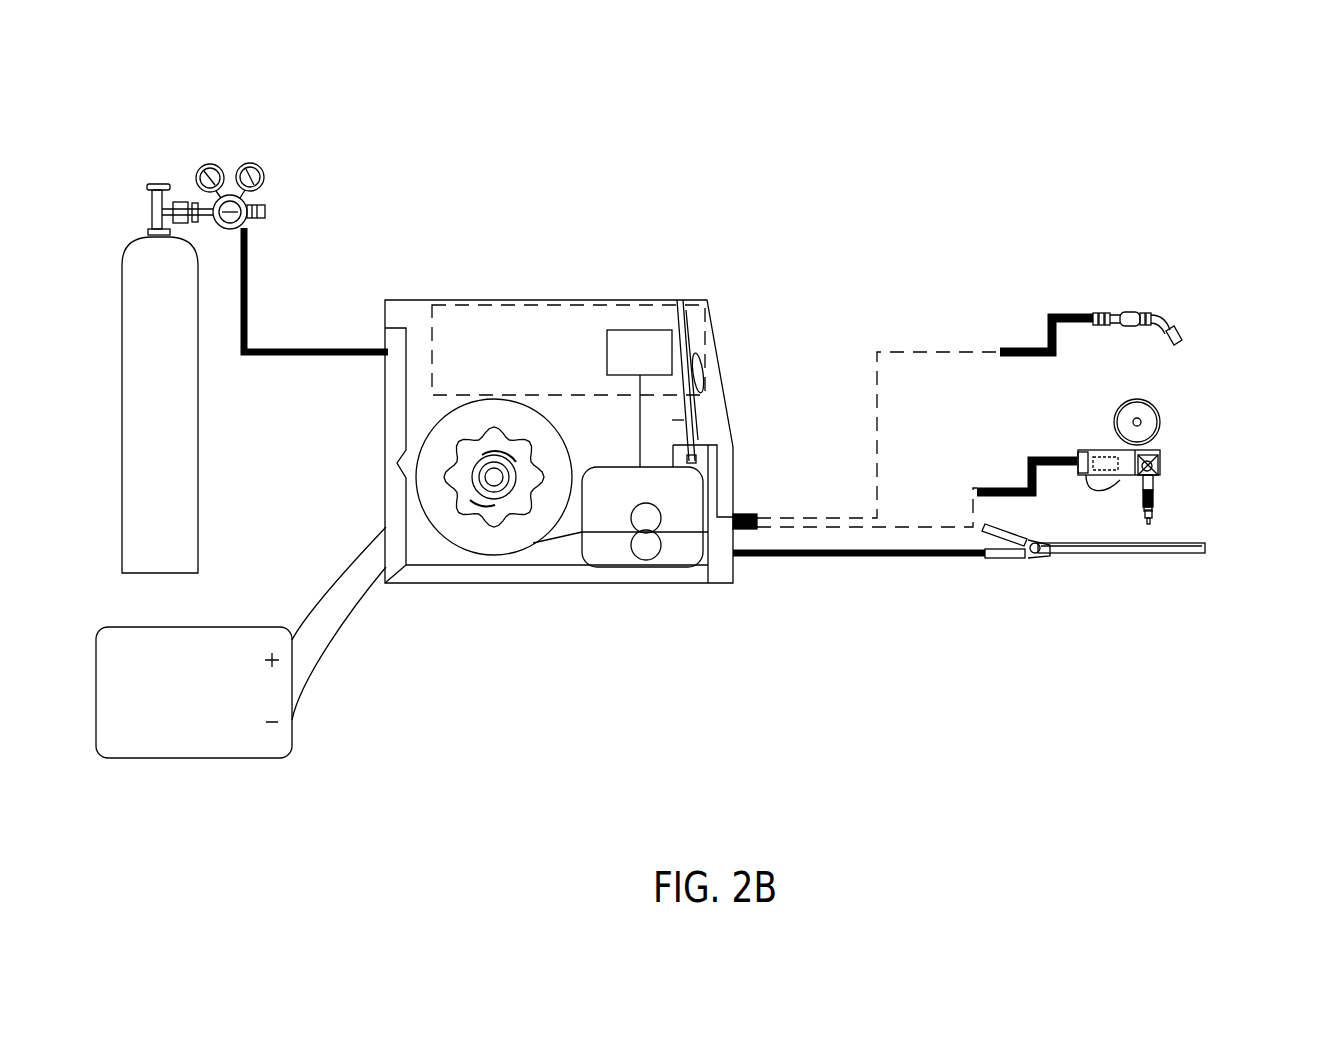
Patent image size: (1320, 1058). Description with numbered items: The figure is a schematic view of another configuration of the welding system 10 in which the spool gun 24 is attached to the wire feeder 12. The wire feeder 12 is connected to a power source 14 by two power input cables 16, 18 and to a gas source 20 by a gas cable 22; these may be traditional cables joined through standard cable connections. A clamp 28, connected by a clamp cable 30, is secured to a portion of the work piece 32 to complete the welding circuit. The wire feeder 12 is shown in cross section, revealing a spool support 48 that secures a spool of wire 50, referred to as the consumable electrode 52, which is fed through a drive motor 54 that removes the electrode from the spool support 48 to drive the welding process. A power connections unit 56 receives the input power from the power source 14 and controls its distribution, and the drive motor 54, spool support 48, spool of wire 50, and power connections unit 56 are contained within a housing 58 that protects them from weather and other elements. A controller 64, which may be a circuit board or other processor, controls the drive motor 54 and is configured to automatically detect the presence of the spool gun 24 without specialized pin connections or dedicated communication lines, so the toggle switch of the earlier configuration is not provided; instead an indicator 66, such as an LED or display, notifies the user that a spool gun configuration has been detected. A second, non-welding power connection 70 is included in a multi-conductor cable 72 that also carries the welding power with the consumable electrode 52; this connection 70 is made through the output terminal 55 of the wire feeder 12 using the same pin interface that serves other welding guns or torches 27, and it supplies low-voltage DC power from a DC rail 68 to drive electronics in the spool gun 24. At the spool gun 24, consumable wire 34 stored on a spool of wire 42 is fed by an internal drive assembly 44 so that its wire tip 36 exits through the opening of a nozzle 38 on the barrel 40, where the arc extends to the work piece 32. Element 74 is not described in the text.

The welding system 10 is at (965, 203).
The wire feeder 12 is at (690, 587).
The power source 14 is at (97, 653).
The power input cable 16 is at (318, 610).
The power input cable 18 is at (338, 635).
The gas source 20 is at (120, 395).
The gas cable 22 is at (247, 303).
The spool gun 24 is at (1229, 447).
The welding gun or torch 27 is at (1150, 320).
The clamp 28 is at (1002, 560).
The clamp cable 30 is at (848, 556).
The work piece 32 is at (1120, 557).
The consumable wire 34 is at (1143, 523).
The wire tip 36 is at (1152, 524).
The nozzle 38 is at (1155, 515).
The barrel 40 is at (1157, 493).
The spool of wire 42 is at (1160, 415).
The drive assembly 44 is at (1095, 458).
The spool support 48 is at (487, 497).
The spool of wire 50 is at (447, 542).
The consumable electrode 52 is at (552, 540).
The drive motor 54 is at (635, 570).
The output terminal 55 is at (768, 500).
The power connections unit 56 is at (430, 340).
The housing 58 is at (700, 300).
The controller 64 is at (622, 330).
The indicator 66 is at (700, 378).
The DC rail 68 is at (695, 432).
The second, non-welding power connection 70 is at (730, 485).
The multi-conductor cable 72 is at (1047, 340).
The trigger 74 is at (1117, 483).